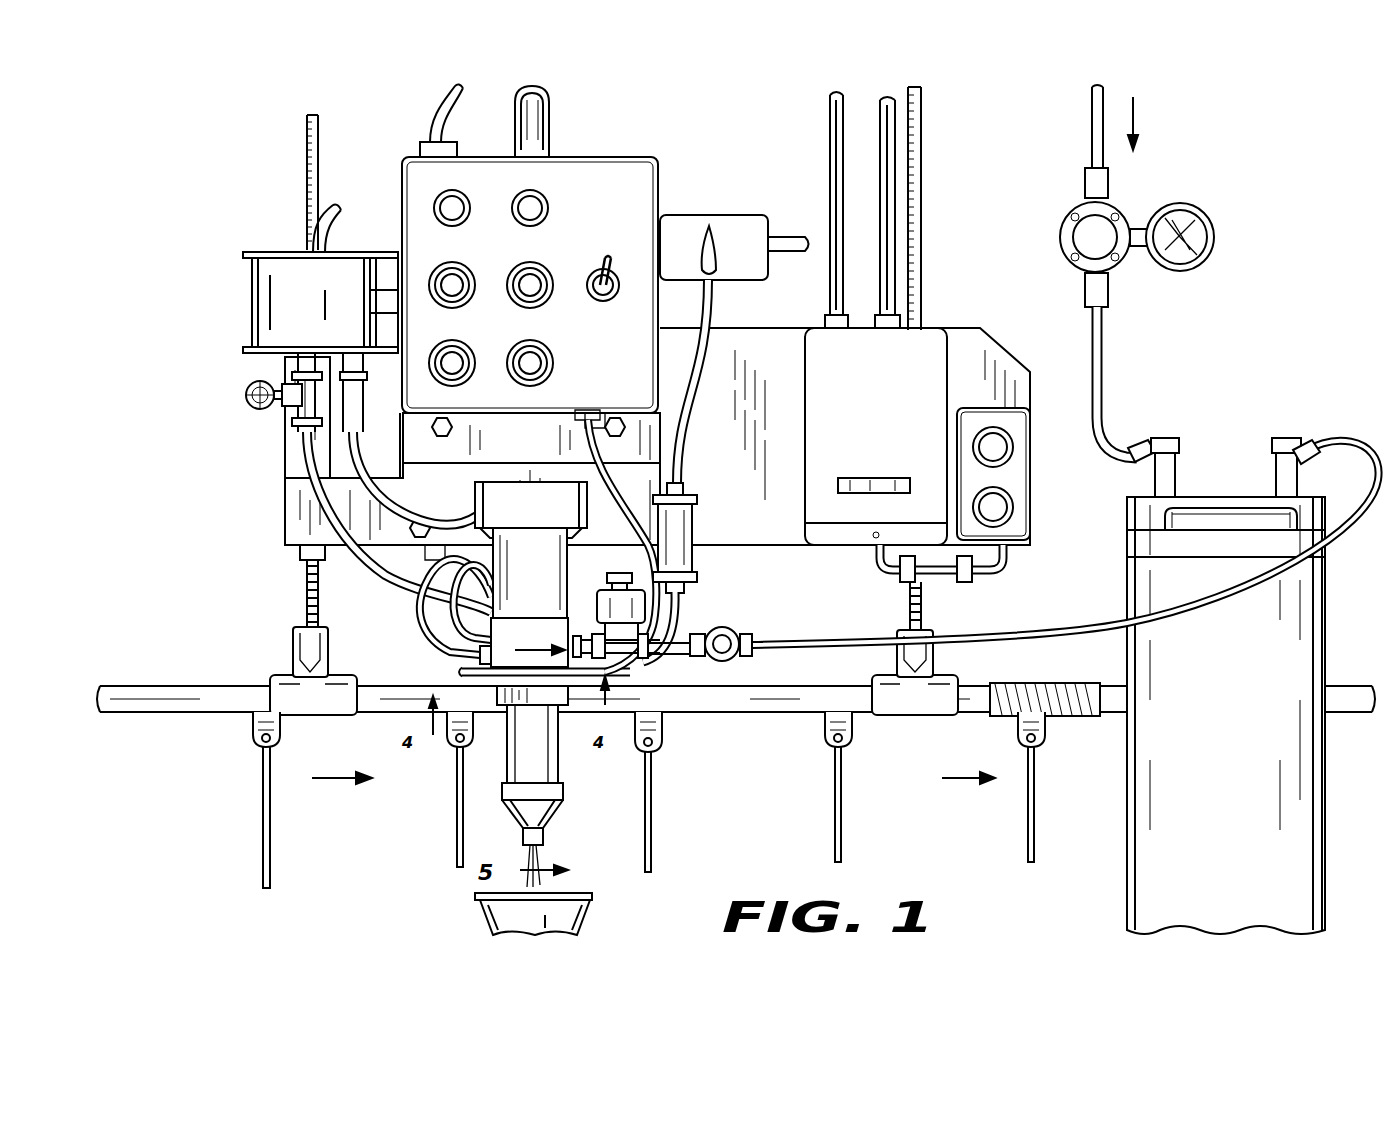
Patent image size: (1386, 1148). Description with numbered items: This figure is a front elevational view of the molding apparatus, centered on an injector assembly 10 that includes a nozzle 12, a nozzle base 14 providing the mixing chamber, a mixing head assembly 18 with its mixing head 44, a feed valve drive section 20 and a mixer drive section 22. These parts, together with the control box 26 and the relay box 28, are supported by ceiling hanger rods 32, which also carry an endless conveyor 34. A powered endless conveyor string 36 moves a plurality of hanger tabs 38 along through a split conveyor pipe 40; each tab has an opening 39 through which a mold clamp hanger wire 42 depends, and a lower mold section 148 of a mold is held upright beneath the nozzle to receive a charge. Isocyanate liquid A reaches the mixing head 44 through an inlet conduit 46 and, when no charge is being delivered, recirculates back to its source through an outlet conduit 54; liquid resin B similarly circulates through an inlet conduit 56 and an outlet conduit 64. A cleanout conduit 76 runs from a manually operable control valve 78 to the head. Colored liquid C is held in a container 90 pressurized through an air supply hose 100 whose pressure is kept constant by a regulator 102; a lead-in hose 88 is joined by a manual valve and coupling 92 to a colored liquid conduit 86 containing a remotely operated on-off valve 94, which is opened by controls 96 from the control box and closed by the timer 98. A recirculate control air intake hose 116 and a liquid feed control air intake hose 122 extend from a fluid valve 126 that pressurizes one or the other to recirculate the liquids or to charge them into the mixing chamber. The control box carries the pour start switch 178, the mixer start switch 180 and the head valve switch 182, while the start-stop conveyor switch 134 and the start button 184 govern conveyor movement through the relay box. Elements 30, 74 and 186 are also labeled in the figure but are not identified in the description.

The injector assembly 10 is at (413, 587).
The nozzle 12 is at (545, 803).
The nozzle base 14 is at (545, 765).
The mixing head assembly 18 is at (540, 622).
The feed valve drive section 20 is at (507, 533).
The mixer drive section 22 is at (527, 470).
The control box 26 is at (608, 170).
The relay box 28 is at (815, 352).
The control housing 30 is at (968, 355).
The ceiling hanger rod 32 is at (305, 150).
The endless conveyor 34 is at (170, 676).
The endless conveyor string 36 is at (1366, 690).
The hanger tab 38 is at (272, 725).
The opening 39 is at (258, 740).
The split conveyor pipe 40 is at (822, 714).
The mold clamp hanger wire 42 is at (270, 858).
The mixing head 44 is at (555, 618).
The inlet conduit 46 is at (587, 523).
The outlet conduit 54 is at (455, 633).
The inlet conduit 56 is at (695, 558).
The outlet conduit 64 is at (425, 606).
The poured stream 74 is at (540, 853).
The cleanout conduit 76 is at (463, 668).
The manually operable control valve 78 is at (718, 230).
The colored liquid conduit 86 is at (677, 650).
The lead-in hose 88 is at (1075, 628).
The container 90 is at (1318, 592).
The manual valve and coupling 92 is at (742, 637).
The on-off valve 94 is at (640, 667).
The controls 96 is at (605, 505).
The timer 98 is at (645, 605).
The air supply hose 100 is at (1100, 380).
The pressure regulator 102 is at (1128, 217).
The recirculate control air intake hose 116 is at (357, 440).
The liquid feed control air intake hose 122 is at (315, 464).
The fluid valve 126 is at (283, 309).
The start-stop conveyor switch 134 is at (1022, 480).
The lower mold section 148 is at (480, 922).
The pour start switch 178 is at (542, 290).
The mixer start switch 180 is at (437, 280).
The head valve switch 182 is at (610, 290).
The start button 184 is at (1008, 448).
The stop button 186 is at (1010, 510).